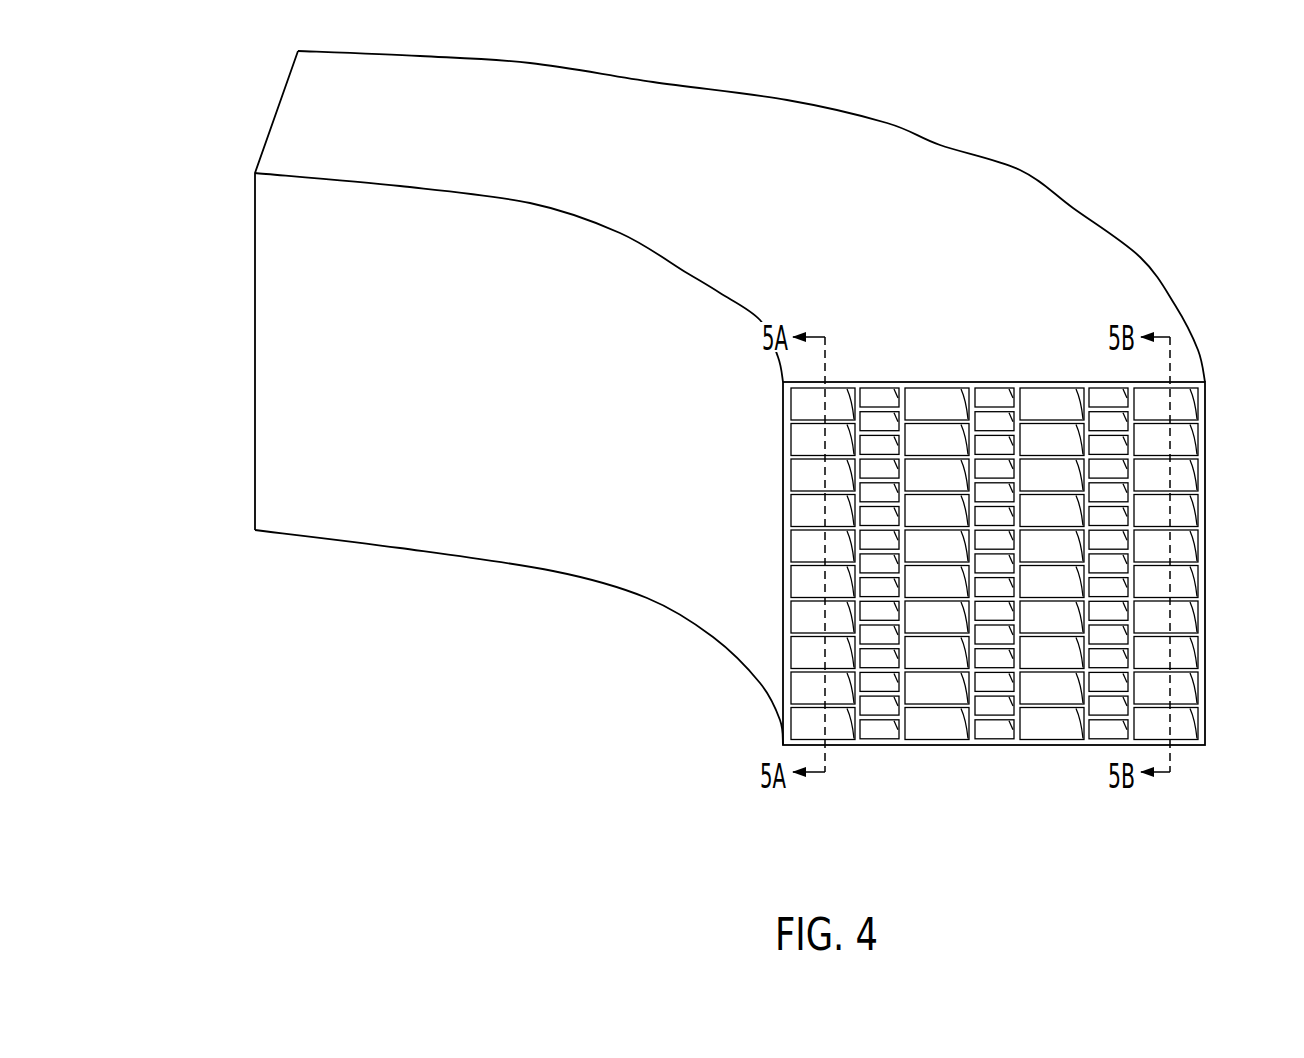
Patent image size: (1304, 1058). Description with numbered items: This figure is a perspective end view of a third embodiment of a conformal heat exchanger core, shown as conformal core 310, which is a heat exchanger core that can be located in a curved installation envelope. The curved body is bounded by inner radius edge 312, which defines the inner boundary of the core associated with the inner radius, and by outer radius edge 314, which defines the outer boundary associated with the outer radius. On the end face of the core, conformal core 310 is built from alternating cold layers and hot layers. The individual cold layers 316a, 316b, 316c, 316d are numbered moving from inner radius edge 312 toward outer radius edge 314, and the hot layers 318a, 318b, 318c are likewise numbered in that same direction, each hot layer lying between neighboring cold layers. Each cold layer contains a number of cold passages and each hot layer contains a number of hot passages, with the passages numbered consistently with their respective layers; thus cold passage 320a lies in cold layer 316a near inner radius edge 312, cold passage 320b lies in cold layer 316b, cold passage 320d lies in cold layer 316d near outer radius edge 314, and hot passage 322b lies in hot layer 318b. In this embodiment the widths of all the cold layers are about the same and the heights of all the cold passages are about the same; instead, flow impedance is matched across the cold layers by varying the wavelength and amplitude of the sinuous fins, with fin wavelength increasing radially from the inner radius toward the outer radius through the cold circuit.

The conformal core 310 is at (669, 398).
The inner radius edge 312 is at (553, 570).
The outer radius edge 314 is at (1020, 170).
The cold layer 316a is at (830, 573).
The cold layer 316b is at (937, 573).
The cold layer 316c is at (1034, 733).
The cold layer 316d is at (1186, 563).
The hot layer 318a is at (885, 733).
The hot layer 318b is at (1002, 595).
The hot layer 318c is at (1096, 733).
The cold passage 320a is at (838, 393).
The cold passage 320b is at (937, 395).
The cold passage 320d is at (1182, 405).
The hot passage 322b is at (997, 395).